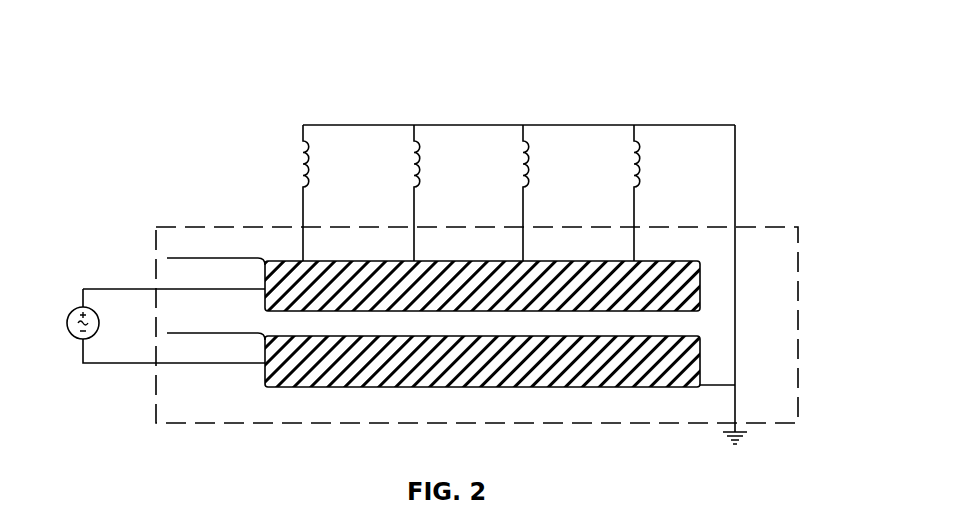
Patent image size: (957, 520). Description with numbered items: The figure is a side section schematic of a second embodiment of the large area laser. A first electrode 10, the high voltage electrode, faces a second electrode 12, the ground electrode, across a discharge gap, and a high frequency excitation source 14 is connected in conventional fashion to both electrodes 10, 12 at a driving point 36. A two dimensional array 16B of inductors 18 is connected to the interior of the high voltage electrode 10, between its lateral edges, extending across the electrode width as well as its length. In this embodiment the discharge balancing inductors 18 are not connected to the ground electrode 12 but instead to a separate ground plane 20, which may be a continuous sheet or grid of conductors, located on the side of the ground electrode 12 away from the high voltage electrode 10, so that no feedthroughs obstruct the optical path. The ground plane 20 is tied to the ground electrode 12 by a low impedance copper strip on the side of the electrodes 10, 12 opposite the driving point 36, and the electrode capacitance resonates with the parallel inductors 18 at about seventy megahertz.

The first electrode 10 is at (703, 282).
The second electrode 12 is at (703, 355).
The high frequency excitation source 14 is at (74, 341).
The two dimensional array of inductors 16B is at (504, 124).
The inductors 18 is at (299, 166).
The ground plane 20 is at (751, 437).
The driving point 36 is at (262, 289).